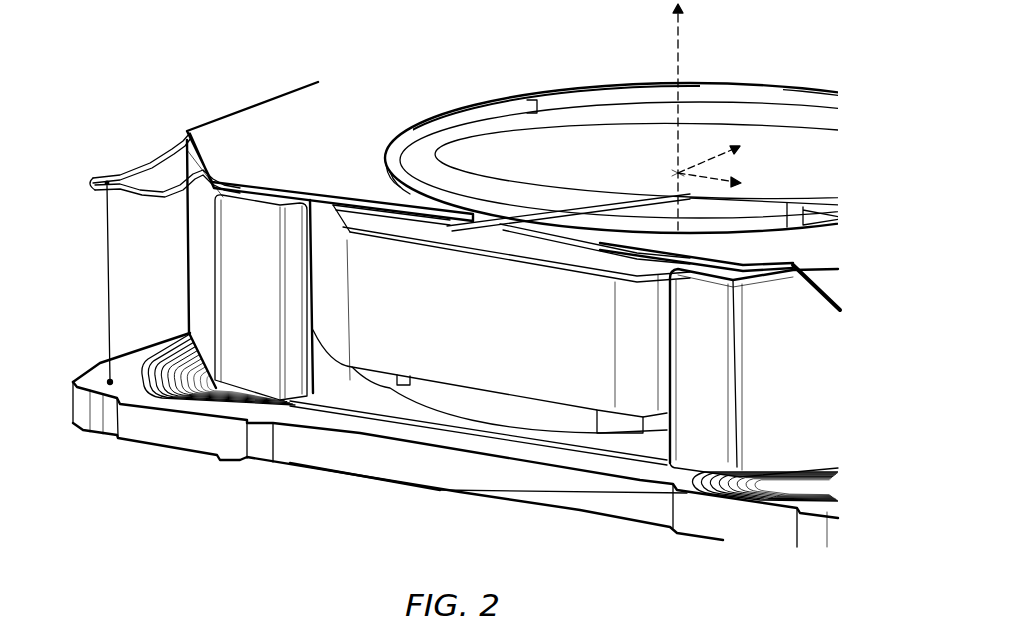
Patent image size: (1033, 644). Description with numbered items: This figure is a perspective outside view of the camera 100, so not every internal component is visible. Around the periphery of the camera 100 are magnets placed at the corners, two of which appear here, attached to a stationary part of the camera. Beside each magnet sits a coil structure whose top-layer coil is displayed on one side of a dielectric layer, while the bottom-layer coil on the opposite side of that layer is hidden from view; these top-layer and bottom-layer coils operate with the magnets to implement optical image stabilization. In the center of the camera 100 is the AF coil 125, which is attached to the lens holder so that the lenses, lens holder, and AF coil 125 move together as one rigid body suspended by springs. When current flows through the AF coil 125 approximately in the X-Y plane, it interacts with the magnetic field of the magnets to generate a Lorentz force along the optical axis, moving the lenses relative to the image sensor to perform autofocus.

The camera 100 is at (241, 50).
The AF coil 125 is at (485, 368).